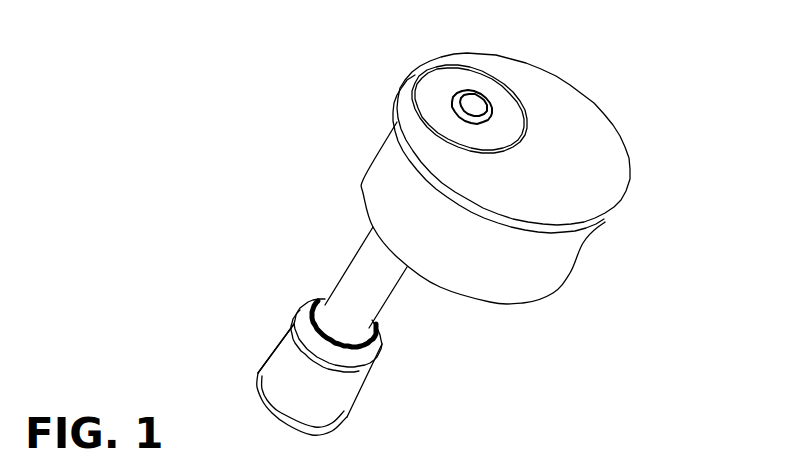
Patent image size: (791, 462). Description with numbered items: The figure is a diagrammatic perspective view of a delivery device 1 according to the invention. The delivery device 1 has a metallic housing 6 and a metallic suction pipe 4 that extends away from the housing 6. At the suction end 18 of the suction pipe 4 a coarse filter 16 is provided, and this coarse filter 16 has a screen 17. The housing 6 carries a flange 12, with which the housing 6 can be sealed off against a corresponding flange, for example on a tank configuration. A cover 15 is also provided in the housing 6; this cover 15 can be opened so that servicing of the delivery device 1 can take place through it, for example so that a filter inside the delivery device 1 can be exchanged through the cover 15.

The delivery device 1 is at (297, 122).
The suction pipe 4 is at (333, 252).
The housing 6 is at (567, 277).
The flange 12 is at (400, 97).
The cover 15 is at (498, 118).
The coarse filter 16 is at (395, 360).
The screen 17 is at (357, 403).
The suction end 18 is at (257, 355).